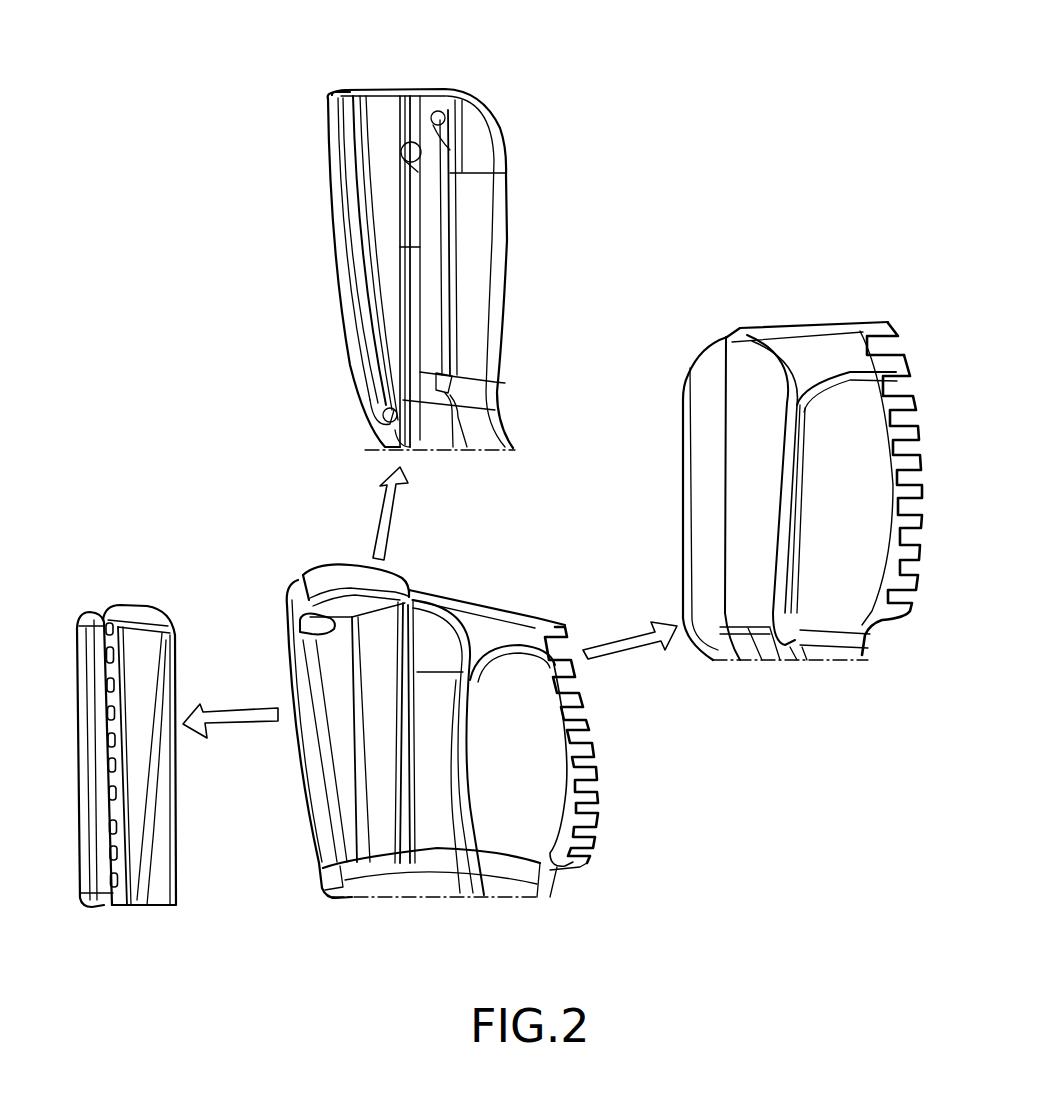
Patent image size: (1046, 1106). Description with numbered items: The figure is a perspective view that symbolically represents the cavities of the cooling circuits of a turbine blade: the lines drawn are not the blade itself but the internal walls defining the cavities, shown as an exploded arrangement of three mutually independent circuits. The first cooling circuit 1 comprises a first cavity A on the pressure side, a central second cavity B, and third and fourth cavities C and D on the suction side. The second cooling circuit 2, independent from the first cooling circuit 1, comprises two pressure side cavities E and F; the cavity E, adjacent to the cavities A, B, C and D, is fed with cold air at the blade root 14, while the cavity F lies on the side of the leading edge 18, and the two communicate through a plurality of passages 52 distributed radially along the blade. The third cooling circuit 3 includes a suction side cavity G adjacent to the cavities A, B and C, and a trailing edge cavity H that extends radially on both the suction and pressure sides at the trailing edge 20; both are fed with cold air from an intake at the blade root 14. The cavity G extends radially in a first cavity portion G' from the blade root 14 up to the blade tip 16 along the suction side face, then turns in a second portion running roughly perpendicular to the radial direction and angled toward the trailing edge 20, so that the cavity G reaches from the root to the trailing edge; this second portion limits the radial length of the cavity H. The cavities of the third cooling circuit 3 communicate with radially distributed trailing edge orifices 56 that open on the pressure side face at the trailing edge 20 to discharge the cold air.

The first cooling circuit 1 is at (411, 64).
The second cooling circuit 2 is at (121, 594).
The third cooling circuit 3 is at (773, 315).
The blade root 14 is at (407, 914).
The blade tip 16 is at (470, 585).
The leading edge 18 is at (272, 665).
The trailing edge 20 is at (935, 566).
The passages 52 is at (112, 763).
The trailing edge orifices 56 is at (887, 326).
The first cavity A is at (472, 140).
The second cavity B is at (427, 143).
The third cavity C is at (385, 110).
The fourth cavity D is at (344, 107).
The cavity E is at (143, 643).
The cavity F is at (102, 620).
The suction side cavity G is at (712, 484).
The first cavity portion G' is at (680, 509).
The trailing edge cavity H is at (857, 462).